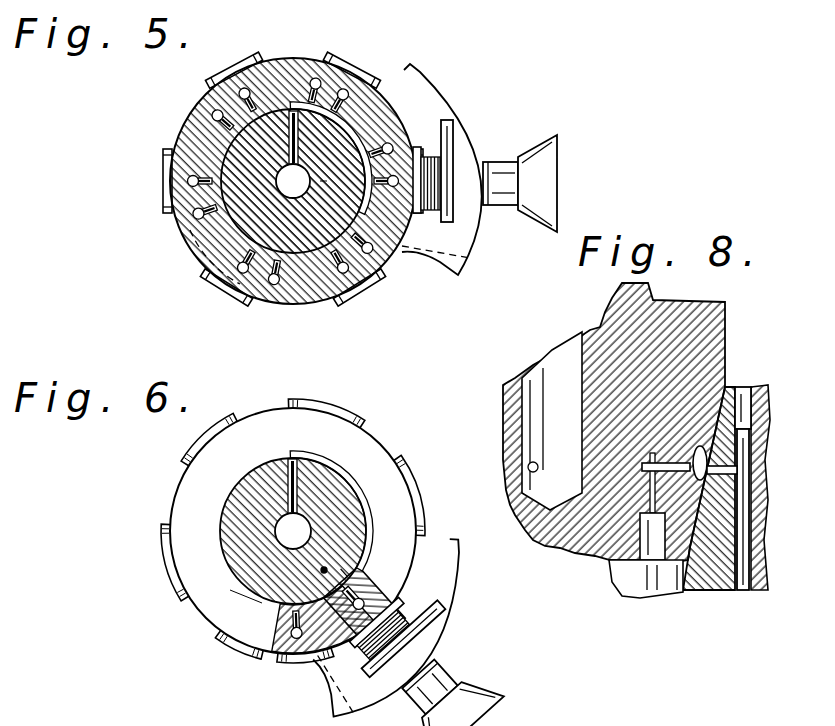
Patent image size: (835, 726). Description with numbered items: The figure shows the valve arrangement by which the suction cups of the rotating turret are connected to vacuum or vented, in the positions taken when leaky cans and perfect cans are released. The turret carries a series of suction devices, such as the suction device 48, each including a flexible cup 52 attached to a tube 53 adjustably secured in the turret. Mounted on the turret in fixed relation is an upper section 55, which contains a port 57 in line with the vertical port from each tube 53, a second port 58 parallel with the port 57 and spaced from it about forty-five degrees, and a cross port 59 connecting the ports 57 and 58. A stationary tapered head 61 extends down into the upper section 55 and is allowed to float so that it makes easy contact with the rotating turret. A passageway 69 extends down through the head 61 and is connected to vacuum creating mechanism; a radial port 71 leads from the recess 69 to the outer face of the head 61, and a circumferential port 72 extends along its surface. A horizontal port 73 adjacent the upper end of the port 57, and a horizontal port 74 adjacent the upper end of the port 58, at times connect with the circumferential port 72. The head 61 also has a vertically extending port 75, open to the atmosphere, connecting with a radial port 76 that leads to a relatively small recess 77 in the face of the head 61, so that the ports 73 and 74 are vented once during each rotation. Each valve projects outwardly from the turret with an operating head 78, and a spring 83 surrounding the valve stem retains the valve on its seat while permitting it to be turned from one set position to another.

In FIG. 5, the suction device 48 is at (545, 183).
In FIG. 6, the suction device 48 is at (493, 715).
In FIG. 5, the flexible cup 52 is at (548, 151).
In FIG. 6, the flexible cup 52 is at (510, 693).
In FIG. 5, the tube 53 is at (500, 208).
In FIG. 6, the tube 53 is at (457, 668).
In FIG. 5, the upper section 55 is at (202, 193).
In FIG. 6, the upper section 55 is at (317, 427).
In FIG. 8, the upper section 55 is at (710, 570).
In FIG. 5, the port 57 is at (396, 263).
In FIG. 6, the port 57 is at (293, 633).
In FIG. 8, the port 57 is at (760, 387).
In FIG. 5, the second port 58 is at (401, 217).
In FIG. 6, the second port 58 is at (405, 607).
In FIG. 5, the cross port 59 is at (457, 258).
In FIG. 6, the cross port 59 is at (350, 675).
In FIG. 5, the tapered head 61 is at (233, 233).
In FIG. 6, the tapered head 61 is at (240, 537).
In FIG. 5, the passageway 69 is at (287, 175).
In FIG. 6, the passageway 69 is at (287, 527).
In FIG. 8, the passageway 69 is at (562, 358).
In FIG. 5, the port 71 is at (296, 110).
In FIG. 6, the port 71 is at (287, 480).
In FIG. 8, the port 71 is at (528, 467).
In FIG. 5, the port 72 is at (342, 126).
In FIG. 6, the port 72 is at (332, 472).
In FIG. 5, the horizontal port 73 is at (339, 181).
In FIG. 6, the horizontal port 73 is at (328, 641).
In FIG. 8, the horizontal port 73 is at (700, 450).
In FIG. 5, the horizontal port 74 is at (437, 175).
In FIG. 6, the horizontal port 74 is at (395, 589).
In FIG. 5, the vertically extending port 75 is at (295, 185).
In FIG. 6, the vertically extending port 75 is at (350, 560).
In FIG. 5, the radial port 76 is at (307, 285).
In FIG. 6, the radial port 76 is at (352, 578).
In FIG. 8, the radial port 76 is at (643, 467).
In FIG. 5, the recess 77 is at (362, 297).
In FIG. 6, the recess 77 is at (367, 597).
In FIG. 8, the recess 77 is at (698, 450).
In FIG. 5, the operating head 78 is at (452, 127).
In FIG. 6, the operating head 78 is at (442, 617).
In FIG. 5, the spring 83 is at (424, 168).
In FIG. 6, the spring 83 is at (400, 640).